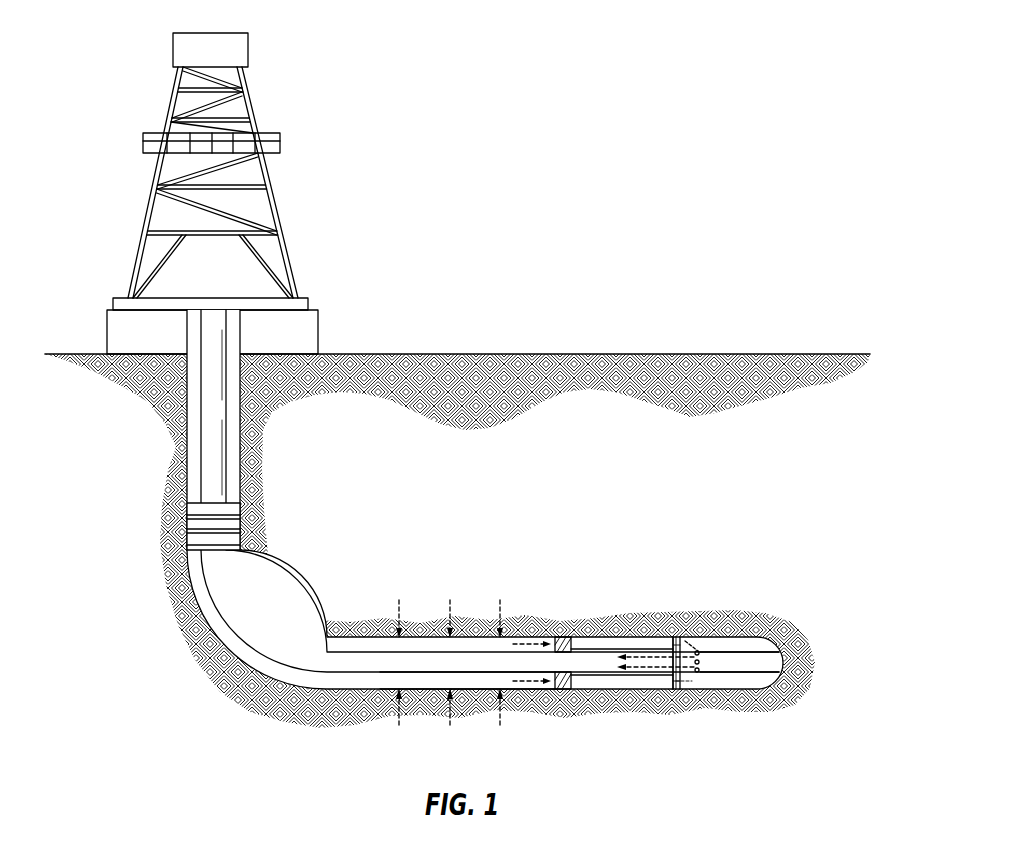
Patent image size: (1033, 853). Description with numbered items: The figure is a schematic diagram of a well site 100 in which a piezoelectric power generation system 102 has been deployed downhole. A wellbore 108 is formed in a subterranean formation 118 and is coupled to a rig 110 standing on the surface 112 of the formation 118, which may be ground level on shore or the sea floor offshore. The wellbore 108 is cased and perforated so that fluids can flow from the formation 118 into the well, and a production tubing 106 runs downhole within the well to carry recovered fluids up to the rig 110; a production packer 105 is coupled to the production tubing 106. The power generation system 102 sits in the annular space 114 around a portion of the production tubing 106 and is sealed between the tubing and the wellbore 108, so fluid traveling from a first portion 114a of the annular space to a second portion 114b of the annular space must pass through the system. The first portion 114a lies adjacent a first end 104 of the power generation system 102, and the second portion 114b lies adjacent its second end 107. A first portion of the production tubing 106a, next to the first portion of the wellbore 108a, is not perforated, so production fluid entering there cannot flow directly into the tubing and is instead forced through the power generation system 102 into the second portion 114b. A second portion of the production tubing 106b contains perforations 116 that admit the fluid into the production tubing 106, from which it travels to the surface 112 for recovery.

The well site 100 is at (625, 130).
The piezoelectric power generation system 102 is at (614, 636).
The first end 104 is at (553, 640).
The production packer 105 is at (241, 512).
The production tubing 106 is at (200, 434).
The first portion of the production tubing 106a is at (507, 666).
The second portion of the production tubing 106b is at (727, 666).
The second end 107 is at (683, 636).
The wellbore 108 is at (187, 477).
The first portion of the wellbore 108a is at (417, 684).
The rig 110 is at (292, 268).
The surface 112 is at (596, 353).
The annular space 114 is at (353, 643).
The first portion of the annular space 114a is at (490, 641).
The second portion of the annular space 114b is at (732, 638).
The perforations 116 is at (698, 671).
The subterranean formation 118 is at (597, 512).